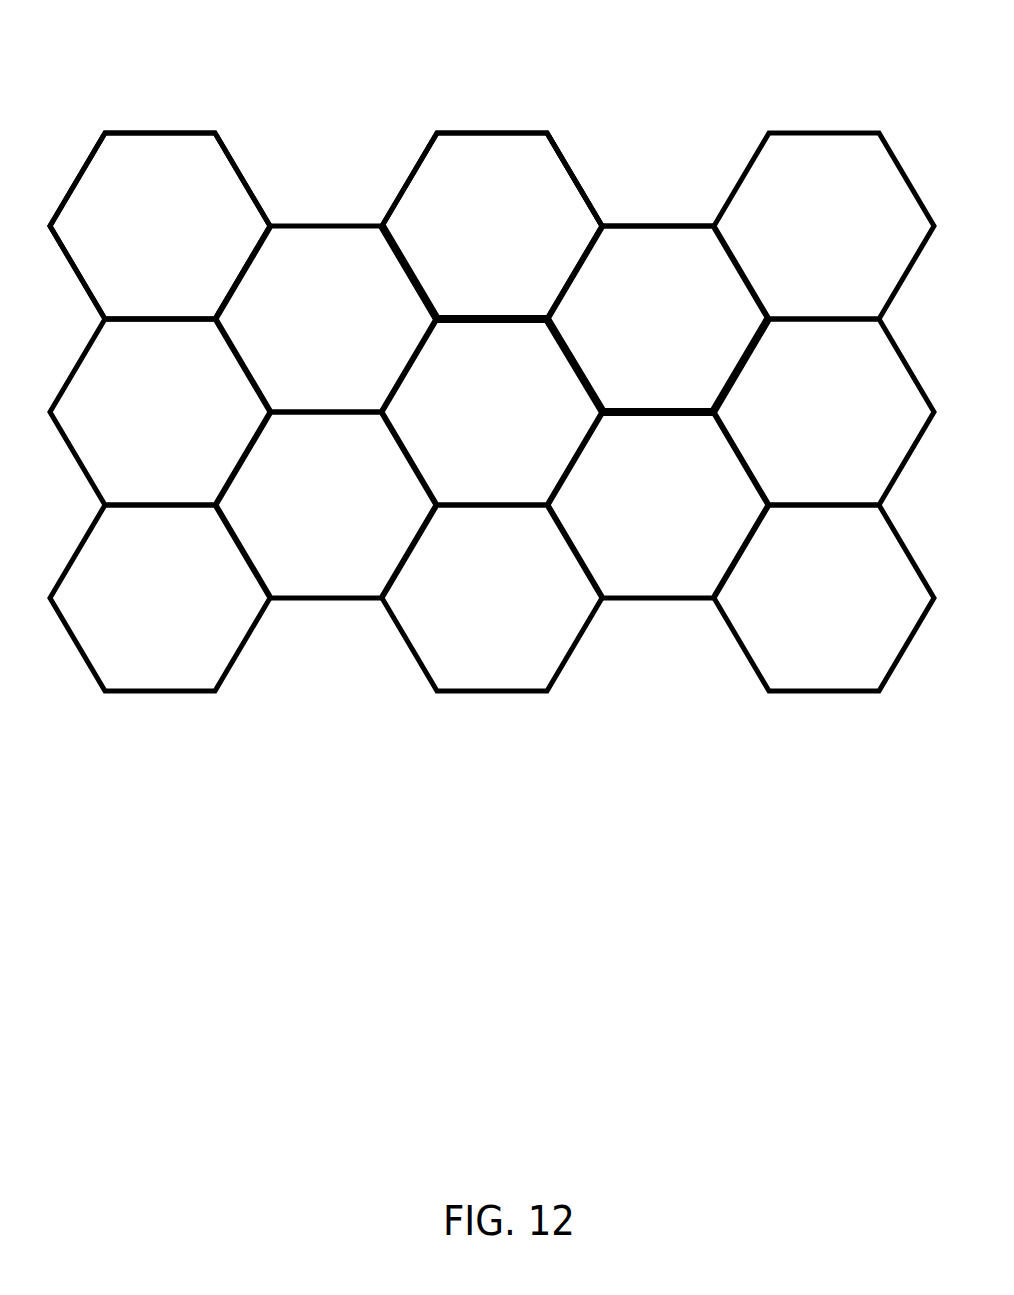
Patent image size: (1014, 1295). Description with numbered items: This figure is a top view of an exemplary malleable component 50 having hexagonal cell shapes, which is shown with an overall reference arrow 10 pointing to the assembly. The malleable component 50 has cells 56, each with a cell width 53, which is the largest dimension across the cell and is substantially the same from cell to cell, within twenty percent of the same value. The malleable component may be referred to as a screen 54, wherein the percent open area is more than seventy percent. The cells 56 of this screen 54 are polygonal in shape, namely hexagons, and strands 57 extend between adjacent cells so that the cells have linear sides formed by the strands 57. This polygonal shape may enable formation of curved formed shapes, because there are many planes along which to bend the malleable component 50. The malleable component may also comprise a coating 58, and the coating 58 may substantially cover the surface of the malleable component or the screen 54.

The honeycomb structure 10 is at (632, 126).
The malleable component 50 is at (243, 171).
The cell width 53 is at (262, 227).
The screen 54 is at (668, 214).
The cells 56 is at (457, 200).
The strands 57 is at (410, 253).
The coating 58 is at (565, 152).